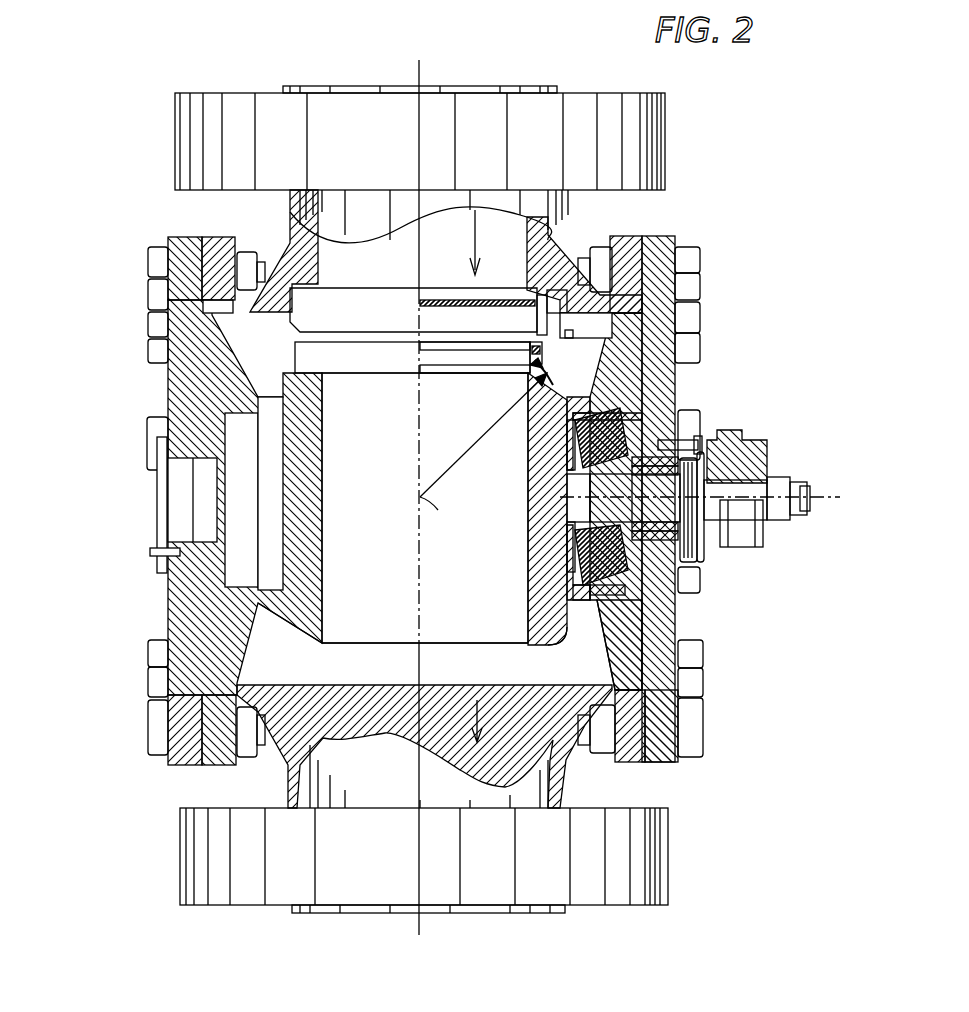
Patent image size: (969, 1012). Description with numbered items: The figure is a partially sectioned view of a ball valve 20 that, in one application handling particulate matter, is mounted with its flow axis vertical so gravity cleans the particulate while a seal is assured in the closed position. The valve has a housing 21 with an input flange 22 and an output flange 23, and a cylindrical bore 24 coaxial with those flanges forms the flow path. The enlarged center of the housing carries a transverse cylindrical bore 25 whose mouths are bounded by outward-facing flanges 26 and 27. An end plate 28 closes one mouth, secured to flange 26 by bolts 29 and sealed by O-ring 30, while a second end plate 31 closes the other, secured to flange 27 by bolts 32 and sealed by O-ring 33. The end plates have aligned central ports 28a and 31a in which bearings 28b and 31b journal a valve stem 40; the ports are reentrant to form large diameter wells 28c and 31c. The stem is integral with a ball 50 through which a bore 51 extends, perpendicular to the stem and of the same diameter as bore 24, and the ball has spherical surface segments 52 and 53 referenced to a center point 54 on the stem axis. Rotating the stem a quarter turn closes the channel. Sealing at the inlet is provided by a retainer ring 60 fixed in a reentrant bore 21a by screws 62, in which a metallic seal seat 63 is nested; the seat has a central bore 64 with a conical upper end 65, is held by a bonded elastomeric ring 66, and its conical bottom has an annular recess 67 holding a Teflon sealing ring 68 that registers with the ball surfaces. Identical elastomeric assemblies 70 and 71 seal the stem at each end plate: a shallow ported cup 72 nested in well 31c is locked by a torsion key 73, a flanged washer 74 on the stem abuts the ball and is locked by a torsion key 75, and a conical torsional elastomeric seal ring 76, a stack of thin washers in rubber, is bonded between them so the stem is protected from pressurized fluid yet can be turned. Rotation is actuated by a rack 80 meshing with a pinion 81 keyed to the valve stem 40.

The ball valve 20 is at (360, 80).
The housing 21 is at (540, 222).
The reentrant bore 21a is at (565, 300).
The input flange 22 is at (648, 152).
The output flange 23 is at (648, 875).
The cylindrical bore 24 is at (318, 270).
The transverse cylindrical bore 25 is at (285, 686).
The flange 26 is at (218, 768).
The flange 27 is at (630, 768).
The end plate 28 is at (186, 240).
The central port 28a is at (158, 440).
The bearing 28b is at (180, 495).
The large diameter well 28c is at (248, 410).
The bolts 29 is at (150, 320).
The O-ring 30 is at (220, 312).
The second end plate 31 is at (650, 236).
The central port 31a is at (676, 550).
The bearing 31b is at (642, 456).
The large diameter well 31c is at (615, 590).
The bolts 32 is at (695, 252).
The O-ring 33 is at (618, 690).
The valve stem 40 is at (790, 490).
The ball 50 is at (405, 581).
The bore 51 is at (326, 642).
The surface segment 52 is at (306, 628).
The surface segment 53 is at (548, 648).
The center point 54 is at (423, 500).
The retainer ring 60 is at (472, 288).
The screws 62 is at (575, 335).
The seal seat 63 is at (300, 357).
The central bore 64 is at (525, 348).
The upper end 65 is at (488, 320).
The elastomeric ring 66 is at (540, 310).
The annular cylindrical recess 67 is at (542, 354).
The sealing ring 68 is at (545, 372).
The elastomeric assembly 70 is at (275, 552).
The elastomeric seal 71 is at (580, 570).
The shallow ported cup 72 is at (598, 412).
The torsion key 73 is at (598, 598).
The flanged washer 74 is at (574, 490).
The torsion key 75 is at (580, 530).
The torsional elastomeric seal ring 76 is at (570, 425).
The rack 80 is at (740, 435).
The pinion 81 is at (742, 548).